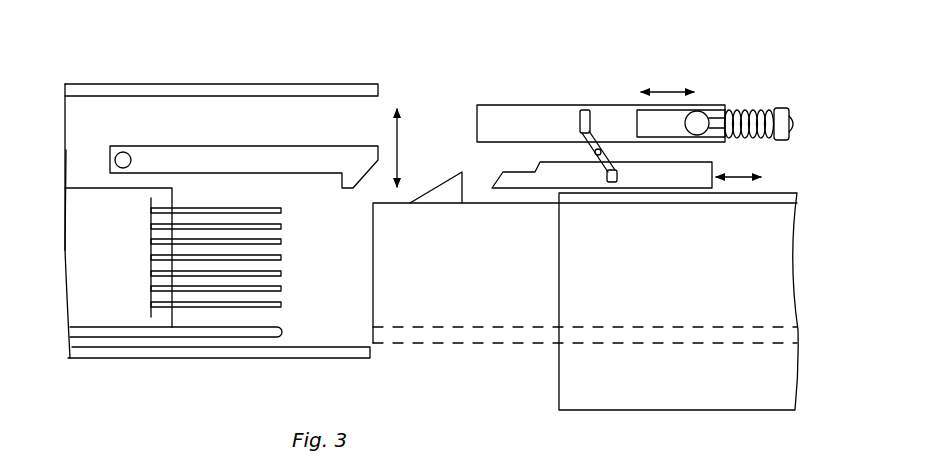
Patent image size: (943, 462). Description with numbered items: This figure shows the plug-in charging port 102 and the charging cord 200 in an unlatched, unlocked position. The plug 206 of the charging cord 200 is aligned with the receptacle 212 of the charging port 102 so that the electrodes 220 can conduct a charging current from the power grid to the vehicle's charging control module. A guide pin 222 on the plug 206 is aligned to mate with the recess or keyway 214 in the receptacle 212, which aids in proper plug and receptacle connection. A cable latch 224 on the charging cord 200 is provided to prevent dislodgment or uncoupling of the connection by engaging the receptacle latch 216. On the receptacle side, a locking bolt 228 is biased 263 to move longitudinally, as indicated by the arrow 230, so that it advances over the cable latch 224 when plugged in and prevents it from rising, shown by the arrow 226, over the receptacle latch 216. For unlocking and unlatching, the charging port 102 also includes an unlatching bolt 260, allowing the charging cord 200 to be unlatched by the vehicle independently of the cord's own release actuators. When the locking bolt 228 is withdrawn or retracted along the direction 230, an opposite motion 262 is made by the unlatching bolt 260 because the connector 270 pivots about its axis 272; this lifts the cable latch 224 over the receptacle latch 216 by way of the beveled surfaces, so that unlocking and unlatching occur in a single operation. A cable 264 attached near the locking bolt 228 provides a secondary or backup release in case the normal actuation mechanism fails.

The plug-in charging port 102 is at (691, 56).
The charging cord 200 is at (176, 76).
The plug 206 is at (80, 282).
The receptacle 212 is at (462, 279).
The recess or keyway 214 is at (463, 333).
The receptacle latch 216 is at (440, 197).
The electrodes 220 is at (151, 233).
The guide pin 222 is at (281, 333).
The cable latch 224 is at (230, 155).
The rising motion of cable latch 226 is at (400, 143).
The locking bolt 228 is at (505, 105).
The longitudinal motion of locking bolt 230 is at (660, 88).
The unlatching bolt 260 is at (535, 182).
The opposite motion of unlatching bolt 262 is at (740, 175).
The bias 263 is at (755, 110).
The cable 264 is at (785, 115).
The connector 270 is at (617, 158).
The axis 272 is at (585, 155).